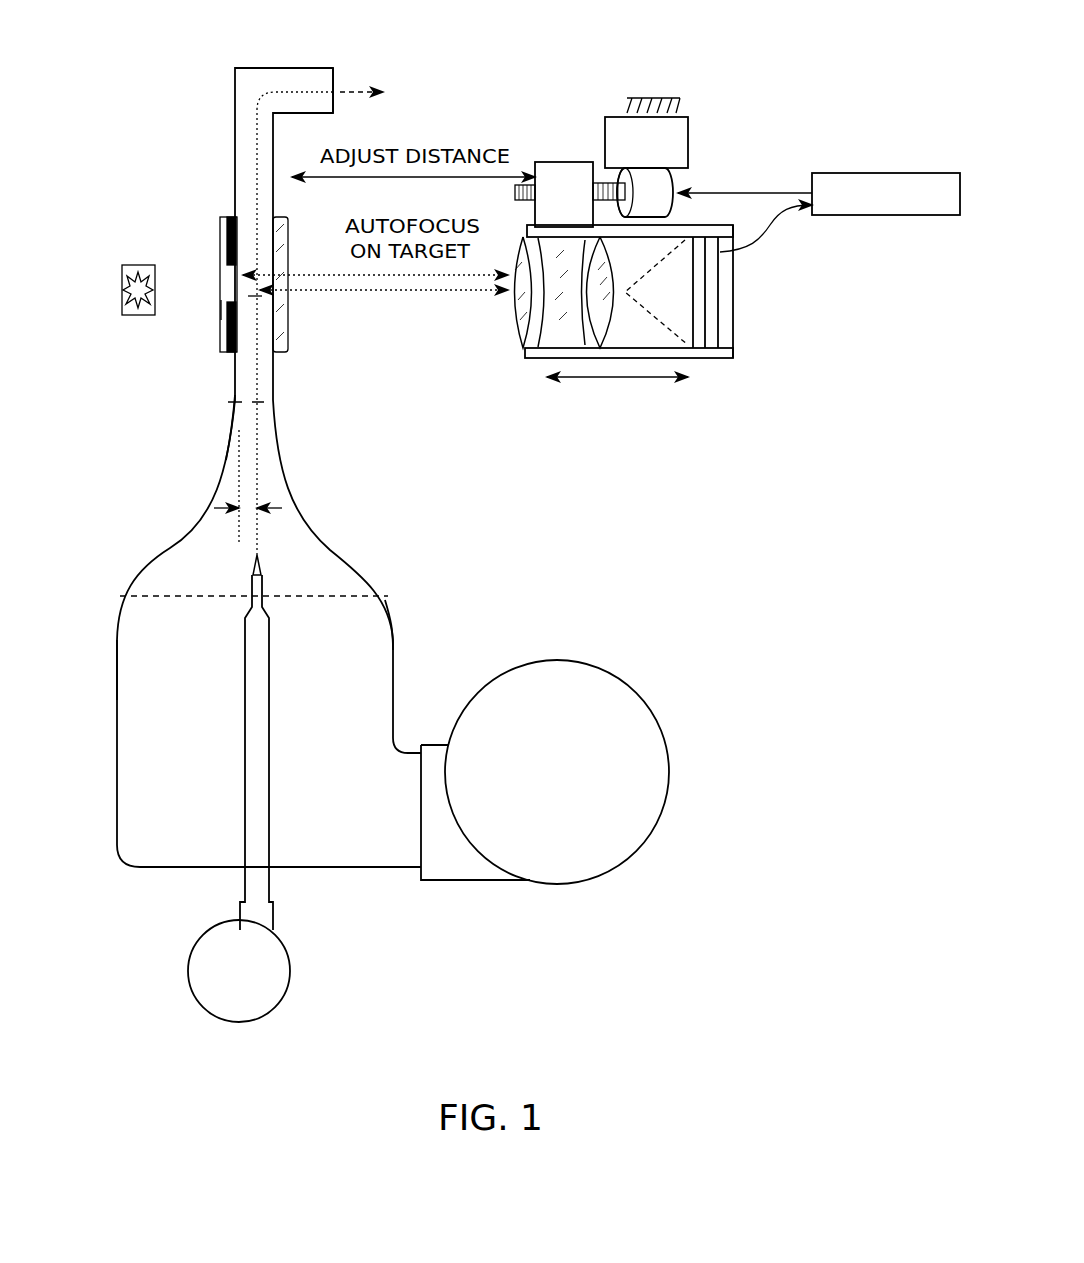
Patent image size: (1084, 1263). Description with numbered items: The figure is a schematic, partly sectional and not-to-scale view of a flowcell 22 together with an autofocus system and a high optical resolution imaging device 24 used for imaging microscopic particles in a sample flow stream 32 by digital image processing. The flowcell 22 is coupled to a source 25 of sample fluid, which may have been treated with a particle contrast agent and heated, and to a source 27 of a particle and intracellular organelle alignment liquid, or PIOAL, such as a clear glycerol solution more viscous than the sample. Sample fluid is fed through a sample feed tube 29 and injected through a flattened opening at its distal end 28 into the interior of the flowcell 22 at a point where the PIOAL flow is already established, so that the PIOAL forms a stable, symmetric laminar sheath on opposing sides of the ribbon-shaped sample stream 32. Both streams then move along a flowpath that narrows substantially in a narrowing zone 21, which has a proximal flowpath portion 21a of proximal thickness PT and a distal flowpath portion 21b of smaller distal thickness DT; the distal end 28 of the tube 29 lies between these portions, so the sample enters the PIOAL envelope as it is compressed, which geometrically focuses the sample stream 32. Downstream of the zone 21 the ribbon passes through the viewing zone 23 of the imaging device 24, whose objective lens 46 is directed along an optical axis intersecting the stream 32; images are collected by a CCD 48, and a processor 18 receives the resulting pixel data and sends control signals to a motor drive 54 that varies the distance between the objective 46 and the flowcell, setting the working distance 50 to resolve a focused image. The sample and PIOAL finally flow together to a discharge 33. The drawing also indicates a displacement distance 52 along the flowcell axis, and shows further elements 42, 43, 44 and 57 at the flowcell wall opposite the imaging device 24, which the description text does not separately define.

The processor 18 is at (898, 172).
The narrowing zone 21 is at (328, 520).
The proximal flowpath portion 21a is at (388, 595).
The distal flowpath portion 21b is at (232, 402).
The flowcell 22 is at (120, 607).
The viewing zone 23 is at (247, 300).
The high optical resolution imaging device 24 is at (527, 355).
The source of sample fluid 25 is at (280, 985).
The source of PIOAL 27 is at (625, 830).
The distal end of sample feed tube 28 is at (280, 575).
The sample feed tube 29 is at (258, 700).
The sample flow stream 32 is at (258, 373).
The discharge 33 is at (335, 78).
The light source 42 is at (134, 263).
The illumination window 43 is at (235, 292).
The flowcell wall 44 is at (226, 316).
The objective lens 46 is at (512, 255).
The CCD 48 is at (688, 262).
The working distance 50 is at (340, 292).
The displacement distance 52 is at (163, 492).
The motor drive 54 is at (672, 212).
The viewport window 57 is at (287, 245).